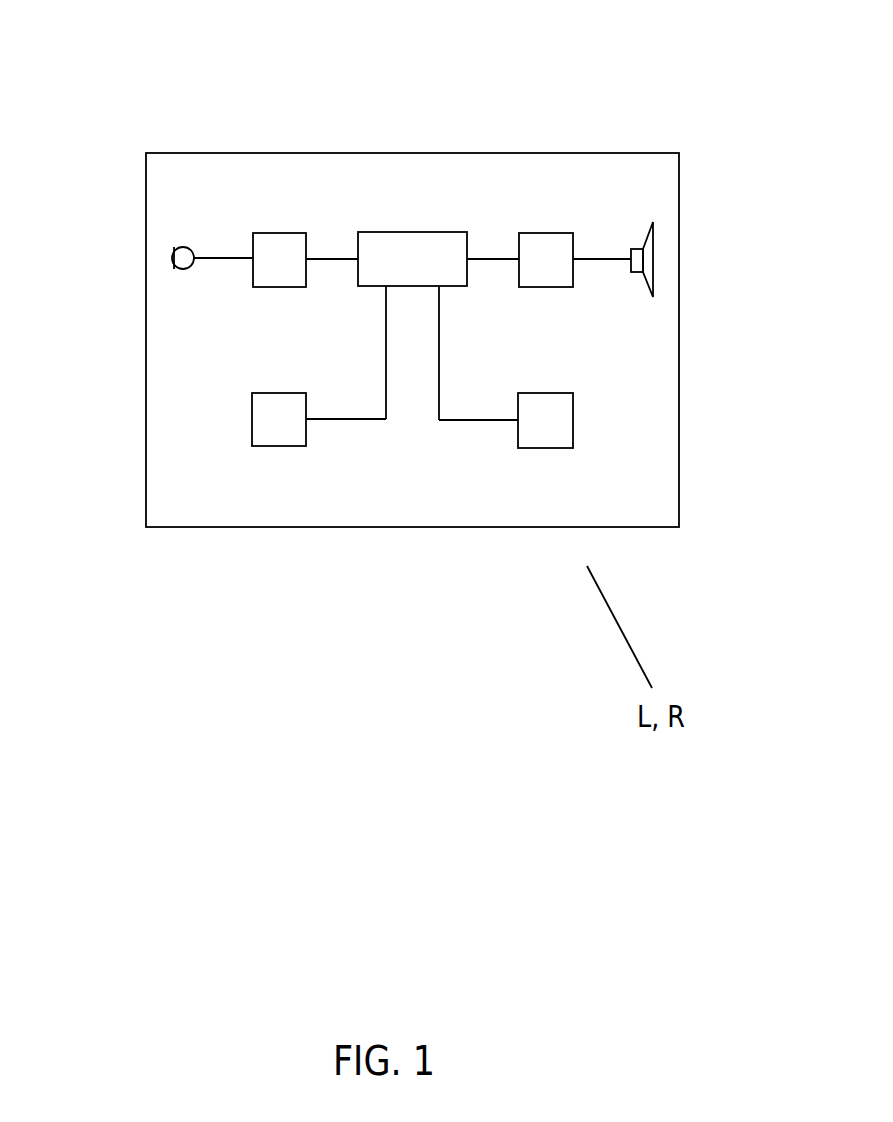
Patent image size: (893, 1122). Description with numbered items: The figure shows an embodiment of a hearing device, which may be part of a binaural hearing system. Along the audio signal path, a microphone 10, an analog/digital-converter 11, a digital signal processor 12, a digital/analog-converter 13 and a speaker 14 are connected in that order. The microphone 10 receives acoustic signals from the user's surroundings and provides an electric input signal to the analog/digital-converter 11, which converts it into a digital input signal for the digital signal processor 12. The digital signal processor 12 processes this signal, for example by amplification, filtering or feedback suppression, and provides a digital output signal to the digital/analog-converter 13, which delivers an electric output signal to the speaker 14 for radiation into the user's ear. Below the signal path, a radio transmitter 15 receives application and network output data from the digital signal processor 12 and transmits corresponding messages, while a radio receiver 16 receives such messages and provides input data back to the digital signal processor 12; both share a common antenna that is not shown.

The microphone 10 is at (177, 252).
The analog/digital-converter 11 is at (263, 243).
The digital signal processor 12 is at (424, 248).
The digital/analog-converter 13 is at (562, 243).
The speaker 14 is at (647, 248).
The radio transmitter 15 is at (263, 435).
The radio receiver 16 is at (563, 437).